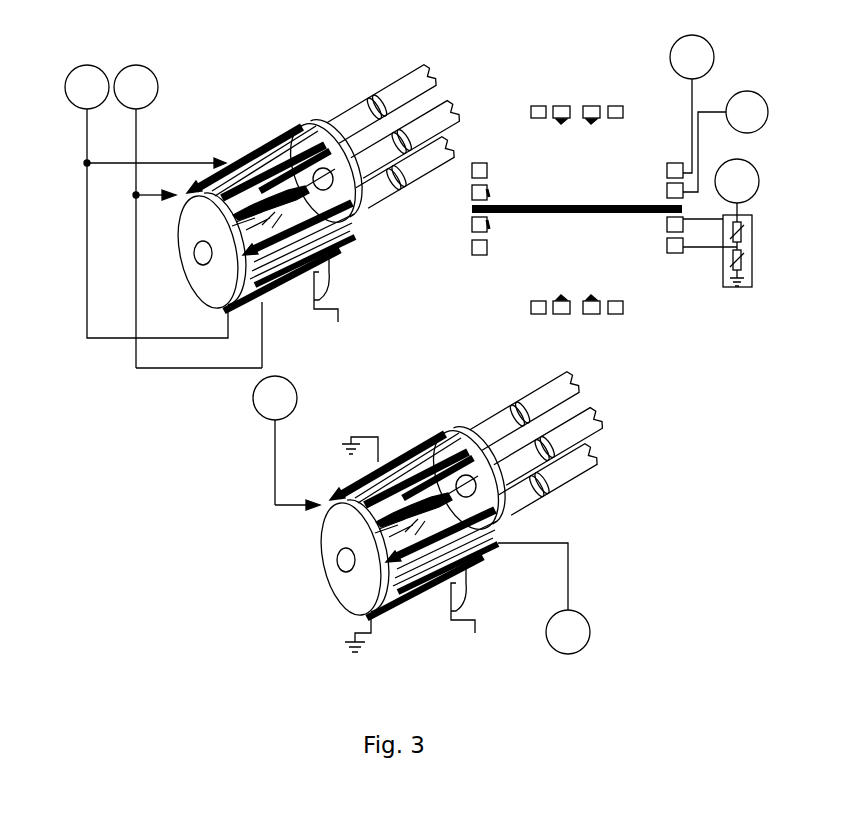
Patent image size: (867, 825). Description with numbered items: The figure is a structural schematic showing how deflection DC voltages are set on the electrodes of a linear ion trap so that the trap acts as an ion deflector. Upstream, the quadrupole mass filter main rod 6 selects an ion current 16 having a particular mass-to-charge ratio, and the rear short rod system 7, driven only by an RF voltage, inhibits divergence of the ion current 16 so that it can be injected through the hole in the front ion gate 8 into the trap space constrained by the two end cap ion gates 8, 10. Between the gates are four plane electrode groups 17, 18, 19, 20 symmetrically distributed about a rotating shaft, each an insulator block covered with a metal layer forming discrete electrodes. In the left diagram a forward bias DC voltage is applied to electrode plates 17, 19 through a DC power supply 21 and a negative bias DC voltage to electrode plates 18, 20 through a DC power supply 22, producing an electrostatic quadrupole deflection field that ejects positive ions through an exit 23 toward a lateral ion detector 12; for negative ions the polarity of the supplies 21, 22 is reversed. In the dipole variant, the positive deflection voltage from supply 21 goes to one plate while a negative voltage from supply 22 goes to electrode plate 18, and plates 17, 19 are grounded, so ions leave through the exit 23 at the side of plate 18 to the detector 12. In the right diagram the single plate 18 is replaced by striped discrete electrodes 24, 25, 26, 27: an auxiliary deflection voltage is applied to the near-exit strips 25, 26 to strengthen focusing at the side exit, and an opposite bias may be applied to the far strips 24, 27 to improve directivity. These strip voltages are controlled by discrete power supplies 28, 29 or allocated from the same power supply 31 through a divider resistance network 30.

The quadrupole mass filter main rod 6 is at (402, 78).
The rear short rod system 7 is at (348, 110).
The front ion gate 8 is at (305, 121).
The end cap ion gate 10 is at (184, 290).
The ion detector 12 is at (360, 419).
The ion current 16 is at (312, 190).
The plane electrode group 17 is at (252, 156).
The plane electrode group 18 is at (354, 243).
The plane electrode group 19 is at (246, 312).
The plane electrode group 20 is at (182, 187).
The DC power supply 21 is at (100, 68).
The DC power supply 22 is at (158, 70).
The exit 23 is at (270, 300).
The discrete electrode 24 is at (676, 162).
The discrete electrode 25 is at (664, 189).
The discrete electrode 26 is at (664, 220).
The discrete electrode 27 is at (673, 256).
The discrete power supply 28 is at (672, 52).
The discrete power supply 29 is at (748, 91).
The divider resistance network 30 is at (736, 290).
The power supply 31 is at (753, 168).